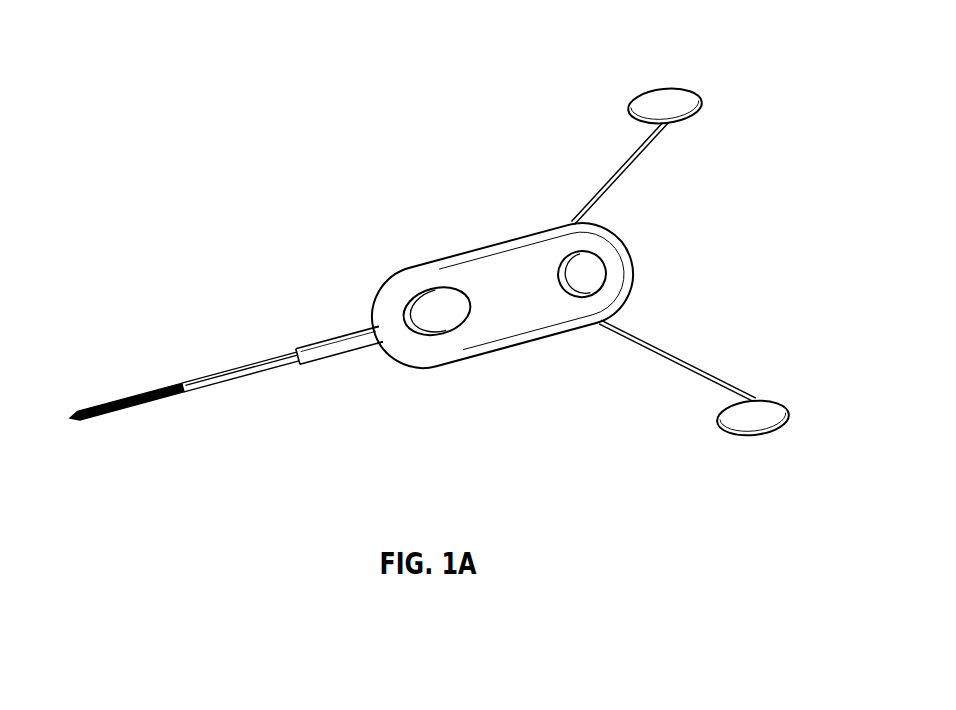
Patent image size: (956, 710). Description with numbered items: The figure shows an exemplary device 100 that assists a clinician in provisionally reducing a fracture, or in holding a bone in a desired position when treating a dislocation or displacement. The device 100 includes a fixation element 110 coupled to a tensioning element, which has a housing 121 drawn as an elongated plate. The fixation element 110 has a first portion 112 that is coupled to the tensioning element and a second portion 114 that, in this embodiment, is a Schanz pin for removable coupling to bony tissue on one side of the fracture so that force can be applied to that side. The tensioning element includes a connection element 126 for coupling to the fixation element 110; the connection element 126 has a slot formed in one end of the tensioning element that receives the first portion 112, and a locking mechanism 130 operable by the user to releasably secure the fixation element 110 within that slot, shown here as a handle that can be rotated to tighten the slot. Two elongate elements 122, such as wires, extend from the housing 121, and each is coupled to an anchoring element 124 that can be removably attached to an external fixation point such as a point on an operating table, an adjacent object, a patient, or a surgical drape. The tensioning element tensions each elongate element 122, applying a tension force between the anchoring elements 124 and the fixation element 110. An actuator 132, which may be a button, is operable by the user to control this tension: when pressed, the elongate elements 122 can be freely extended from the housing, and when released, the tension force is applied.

The device 100 is at (542, 232).
The fixation element 110 is at (135, 397).
The first portion 112 is at (273, 367).
The second portion 114 is at (73, 415).
The housing 121 is at (490, 245).
The elongate element 122 is at (630, 167).
The anchoring element 124 is at (687, 105).
The connection element 126 is at (320, 340).
The locking mechanism 130 is at (373, 348).
The actuator 132 is at (423, 320).